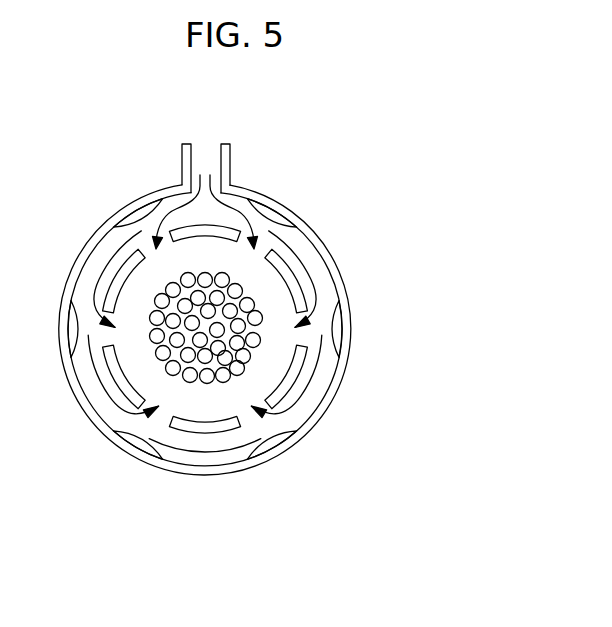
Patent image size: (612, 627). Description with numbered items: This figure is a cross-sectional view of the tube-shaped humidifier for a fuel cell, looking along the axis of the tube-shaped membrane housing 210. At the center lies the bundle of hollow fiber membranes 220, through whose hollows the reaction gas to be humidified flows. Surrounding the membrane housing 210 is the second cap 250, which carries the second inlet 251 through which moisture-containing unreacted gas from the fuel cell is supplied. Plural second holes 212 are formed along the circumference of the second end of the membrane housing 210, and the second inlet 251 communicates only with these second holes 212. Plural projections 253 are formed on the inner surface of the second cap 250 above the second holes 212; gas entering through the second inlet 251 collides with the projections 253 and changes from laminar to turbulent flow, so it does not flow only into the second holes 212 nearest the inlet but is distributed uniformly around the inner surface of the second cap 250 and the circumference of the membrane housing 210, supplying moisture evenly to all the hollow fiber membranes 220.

The second cap 250 is at (283, 212).
The second inlet 251 is at (205, 163).
The projections 253 is at (263, 442).
The membrane housing 210 is at (293, 280).
The second holes 212 is at (245, 418).
The hollow fiber membranes 220 is at (257, 340).